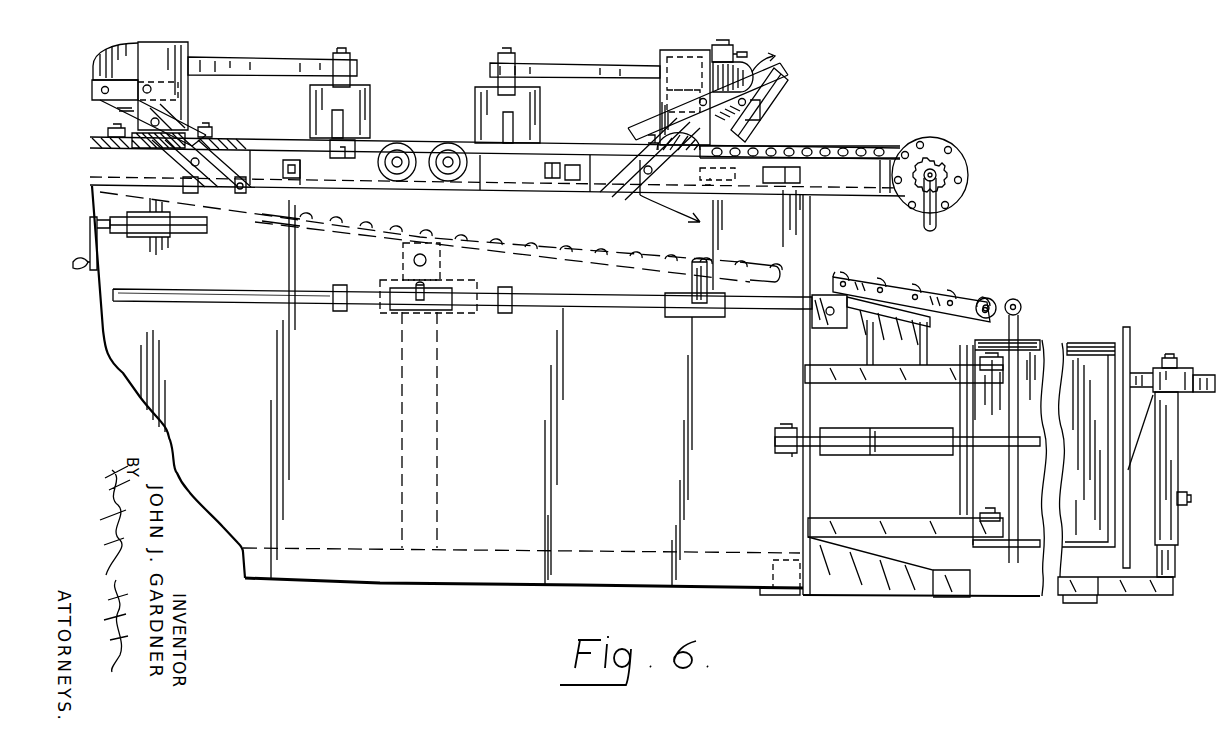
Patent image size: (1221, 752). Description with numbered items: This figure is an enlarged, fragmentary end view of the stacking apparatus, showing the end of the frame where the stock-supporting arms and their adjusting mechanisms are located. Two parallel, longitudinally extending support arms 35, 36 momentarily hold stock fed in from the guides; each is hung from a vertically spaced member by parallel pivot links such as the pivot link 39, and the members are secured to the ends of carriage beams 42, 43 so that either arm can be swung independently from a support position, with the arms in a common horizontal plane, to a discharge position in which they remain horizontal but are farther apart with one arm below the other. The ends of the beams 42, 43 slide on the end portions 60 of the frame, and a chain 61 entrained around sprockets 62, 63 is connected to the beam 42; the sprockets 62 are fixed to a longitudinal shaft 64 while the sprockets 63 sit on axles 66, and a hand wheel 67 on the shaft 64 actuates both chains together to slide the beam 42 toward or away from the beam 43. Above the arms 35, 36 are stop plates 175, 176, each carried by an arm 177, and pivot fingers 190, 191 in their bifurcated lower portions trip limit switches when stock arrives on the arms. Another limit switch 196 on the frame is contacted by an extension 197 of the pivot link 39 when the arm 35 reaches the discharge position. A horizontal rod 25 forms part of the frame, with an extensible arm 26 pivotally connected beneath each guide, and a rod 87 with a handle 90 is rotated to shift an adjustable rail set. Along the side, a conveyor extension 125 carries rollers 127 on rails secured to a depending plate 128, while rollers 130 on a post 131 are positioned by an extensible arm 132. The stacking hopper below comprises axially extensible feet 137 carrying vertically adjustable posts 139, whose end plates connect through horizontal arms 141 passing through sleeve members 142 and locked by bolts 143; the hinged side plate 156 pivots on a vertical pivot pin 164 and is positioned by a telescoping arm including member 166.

The horizontal rod 25 is at (598, 306).
The extensible arm 26 is at (400, 302).
The support arm 35 is at (590, 146).
The support arm 36 is at (292, 170).
The pivot link 39 is at (762, 112).
The carriage beam 42 is at (650, 125).
The carriage beam 43 is at (198, 116).
The end portion of the frame 60 is at (862, 146).
The chain 61 is at (398, 144).
The sprocket 62 is at (915, 140).
The sprocket 63 is at (418, 145).
The shaft 64 is at (951, 153).
The axle 66 is at (448, 168).
The hand wheel 67 is at (956, 145).
The rod 87 is at (136, 234).
The handle 90 is at (88, 268).
The conveyor extension 125 is at (896, 278).
The roller 127 is at (958, 296).
The depending plate 128 is at (904, 394).
The roller 130 is at (1020, 300).
The post 131 is at (1020, 326).
The extensible arm 132 is at (967, 430).
The axially extensible foot 137 is at (1127, 597).
The vertically adjustable post 139 is at (1174, 478).
The horizontal arm 141 is at (1204, 393).
The sleeve member 142 is at (1152, 366).
The bolt 143 is at (1172, 357).
The side plate 156 is at (1085, 344).
The vertical pivot pin 164 is at (995, 374).
The telescopically engaged member 166 is at (866, 447).
The stop plate 175 is at (541, 116).
The stop plate 176 is at (360, 88).
The arm 177 is at (264, 56).
The pivot finger 190 is at (501, 126).
The pivot finger 191 is at (381, 90).
The limit switch 196 is at (742, 48).
The extension 197 is at (790, 69).